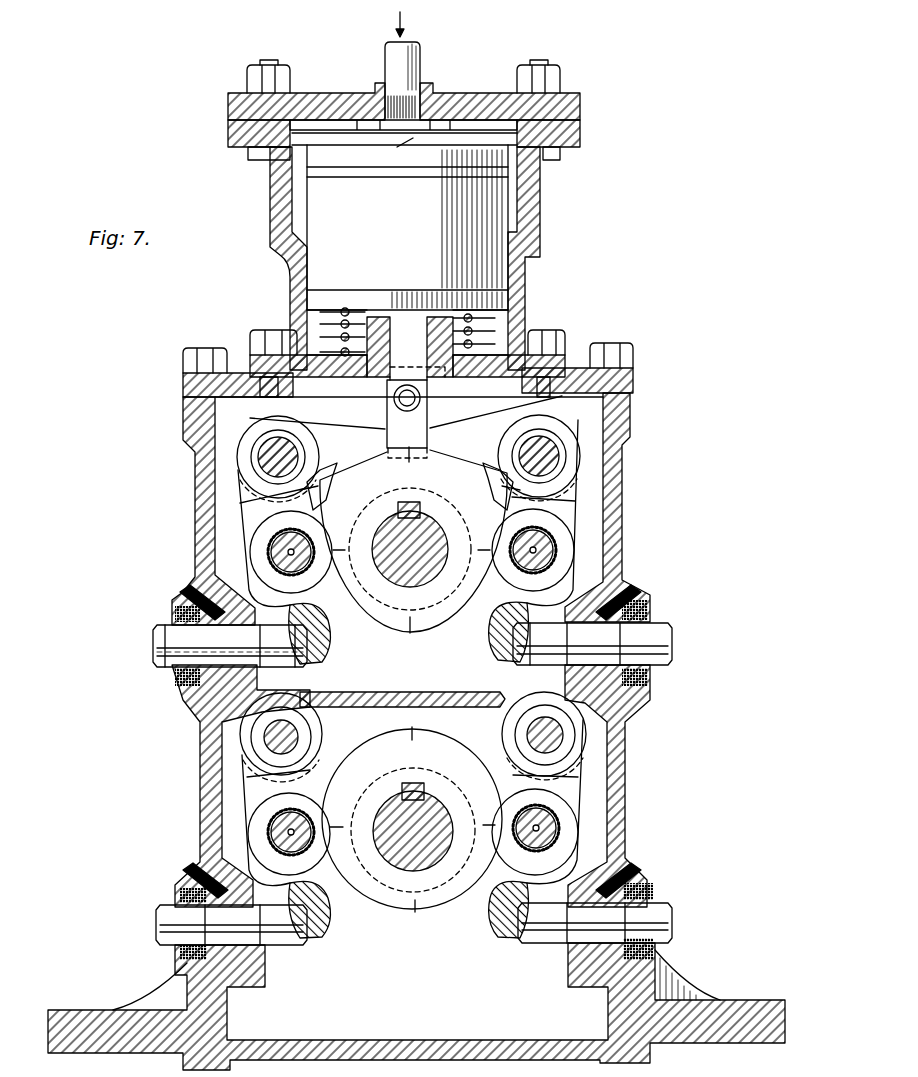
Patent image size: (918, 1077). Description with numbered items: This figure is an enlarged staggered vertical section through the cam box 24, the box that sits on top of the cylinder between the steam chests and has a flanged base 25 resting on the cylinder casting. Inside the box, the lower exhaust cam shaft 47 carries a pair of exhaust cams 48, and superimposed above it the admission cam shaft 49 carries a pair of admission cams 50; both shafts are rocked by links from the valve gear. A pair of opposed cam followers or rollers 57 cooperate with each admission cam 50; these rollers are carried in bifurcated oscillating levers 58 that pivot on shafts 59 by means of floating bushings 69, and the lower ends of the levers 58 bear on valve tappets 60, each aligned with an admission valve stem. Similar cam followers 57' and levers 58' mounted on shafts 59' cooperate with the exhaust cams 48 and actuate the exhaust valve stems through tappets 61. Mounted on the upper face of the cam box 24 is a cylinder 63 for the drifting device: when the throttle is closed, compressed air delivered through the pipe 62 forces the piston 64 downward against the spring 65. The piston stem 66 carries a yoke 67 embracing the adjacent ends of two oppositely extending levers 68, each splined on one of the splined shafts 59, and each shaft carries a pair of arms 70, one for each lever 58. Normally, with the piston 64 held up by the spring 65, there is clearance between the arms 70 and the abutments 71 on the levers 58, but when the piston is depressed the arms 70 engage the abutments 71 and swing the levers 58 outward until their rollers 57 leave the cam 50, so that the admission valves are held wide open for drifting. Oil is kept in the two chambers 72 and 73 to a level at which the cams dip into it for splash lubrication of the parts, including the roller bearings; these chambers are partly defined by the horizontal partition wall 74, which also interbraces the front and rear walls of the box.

The cam box 24 is at (624, 776).
The flanged base 25 is at (750, 1007).
The exhaust cam shaft 47 is at (428, 870).
The exhaust cams 48 is at (412, 819).
The admission cam shaft 49 is at (418, 588).
The admission cams 50 is at (411, 546).
The cam followers or rollers 57 is at (413, 563).
The cam followers 57' is at (437, 861).
The oscillating levers 58 is at (381, 539).
The levers 58' is at (418, 815).
The shafts 59 is at (405, 451).
The shafts 59' is at (413, 743).
The valve tappets 60 is at (283, 660).
The tappets 61 is at (283, 945).
The pipe 62 is at (421, 62).
The cylinder 63 is at (545, 200).
The piston 64 is at (403, 215).
The spring 65 is at (474, 334).
The piston stem 66 is at (410, 348).
The yoke 67 is at (407, 421).
The levers 68 is at (406, 424).
The floating bushings 69 is at (262, 460).
The arms 70 is at (320, 488).
The abutments 71 is at (472, 515).
The chamber 72 is at (413, 565).
The chamber 73 is at (416, 980).
The horizontal partition wall 74 is at (467, 692).